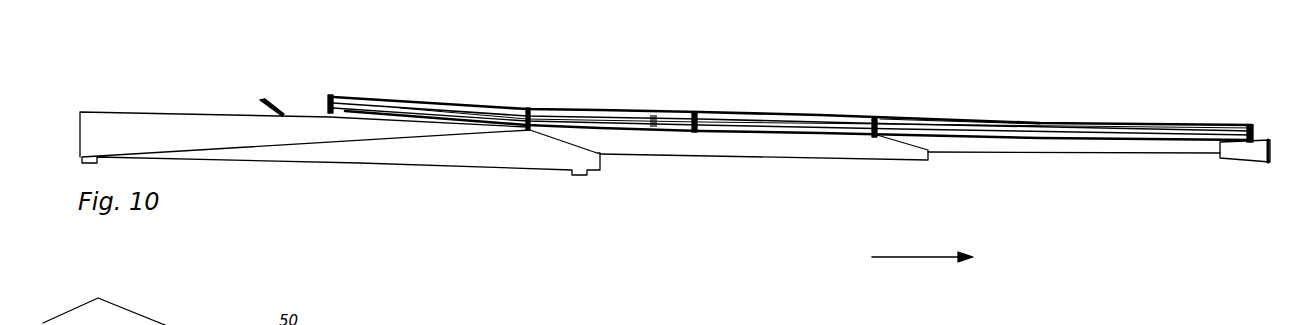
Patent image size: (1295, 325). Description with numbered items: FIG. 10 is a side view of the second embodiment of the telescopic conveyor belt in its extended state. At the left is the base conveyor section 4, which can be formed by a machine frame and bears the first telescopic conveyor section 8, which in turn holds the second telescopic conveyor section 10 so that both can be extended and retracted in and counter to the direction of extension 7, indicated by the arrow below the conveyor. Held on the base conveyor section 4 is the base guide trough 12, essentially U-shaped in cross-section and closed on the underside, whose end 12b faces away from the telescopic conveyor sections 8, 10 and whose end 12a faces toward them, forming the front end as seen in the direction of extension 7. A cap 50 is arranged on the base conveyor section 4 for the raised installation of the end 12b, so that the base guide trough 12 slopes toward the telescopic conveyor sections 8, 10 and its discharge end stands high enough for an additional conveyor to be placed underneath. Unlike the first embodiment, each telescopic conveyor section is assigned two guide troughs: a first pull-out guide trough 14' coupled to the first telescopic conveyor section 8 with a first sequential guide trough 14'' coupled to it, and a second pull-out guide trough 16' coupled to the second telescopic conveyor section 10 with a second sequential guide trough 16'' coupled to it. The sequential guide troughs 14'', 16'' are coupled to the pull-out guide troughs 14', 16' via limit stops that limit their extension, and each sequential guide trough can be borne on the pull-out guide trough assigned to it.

The base conveyor section 4 is at (340, 145).
The first telescopic conveyor section 8 is at (692, 142).
The second telescopic conveyor section 10 is at (1065, 152).
The base guide trough 12 is at (438, 95).
The end of the base guide trough facing the telescopic conveyor sections 12a is at (529, 96).
The end of the base guide trough facing away from the telescopic conveyor sections 12b is at (326, 80).
The first pull-out guide trough 14' is at (808, 111).
The first sequential guide trough 14'' is at (636, 107).
The second pull-out guide trough 16' is at (1179, 121).
The second sequential guide trough 16'' is at (960, 108).
The cap 50 is at (290, 100).
The direction of extension 7 is at (928, 265).